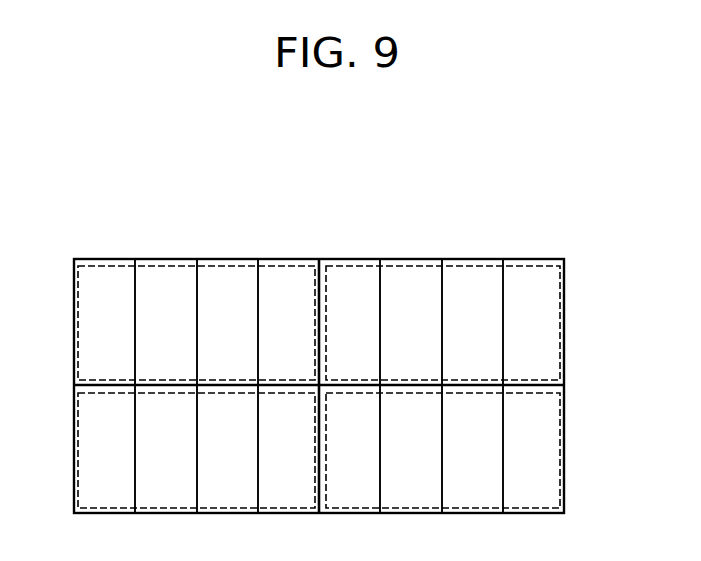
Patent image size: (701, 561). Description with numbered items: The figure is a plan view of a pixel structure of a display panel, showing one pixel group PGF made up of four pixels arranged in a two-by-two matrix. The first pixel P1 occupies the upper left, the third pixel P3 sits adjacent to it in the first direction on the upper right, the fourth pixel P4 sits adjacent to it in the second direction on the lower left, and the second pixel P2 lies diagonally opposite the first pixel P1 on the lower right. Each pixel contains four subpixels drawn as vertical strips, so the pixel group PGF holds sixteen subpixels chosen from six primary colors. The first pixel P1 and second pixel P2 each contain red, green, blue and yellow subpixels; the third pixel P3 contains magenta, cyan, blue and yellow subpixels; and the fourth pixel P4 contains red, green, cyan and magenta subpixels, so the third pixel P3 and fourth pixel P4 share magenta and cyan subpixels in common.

The pixel group PGF is at (242, 243).
The first pixel P1 is at (74, 321).
The second pixel P2 is at (564, 450).
The third pixel P3 is at (564, 320).
The fourth pixel P4 is at (74, 450).